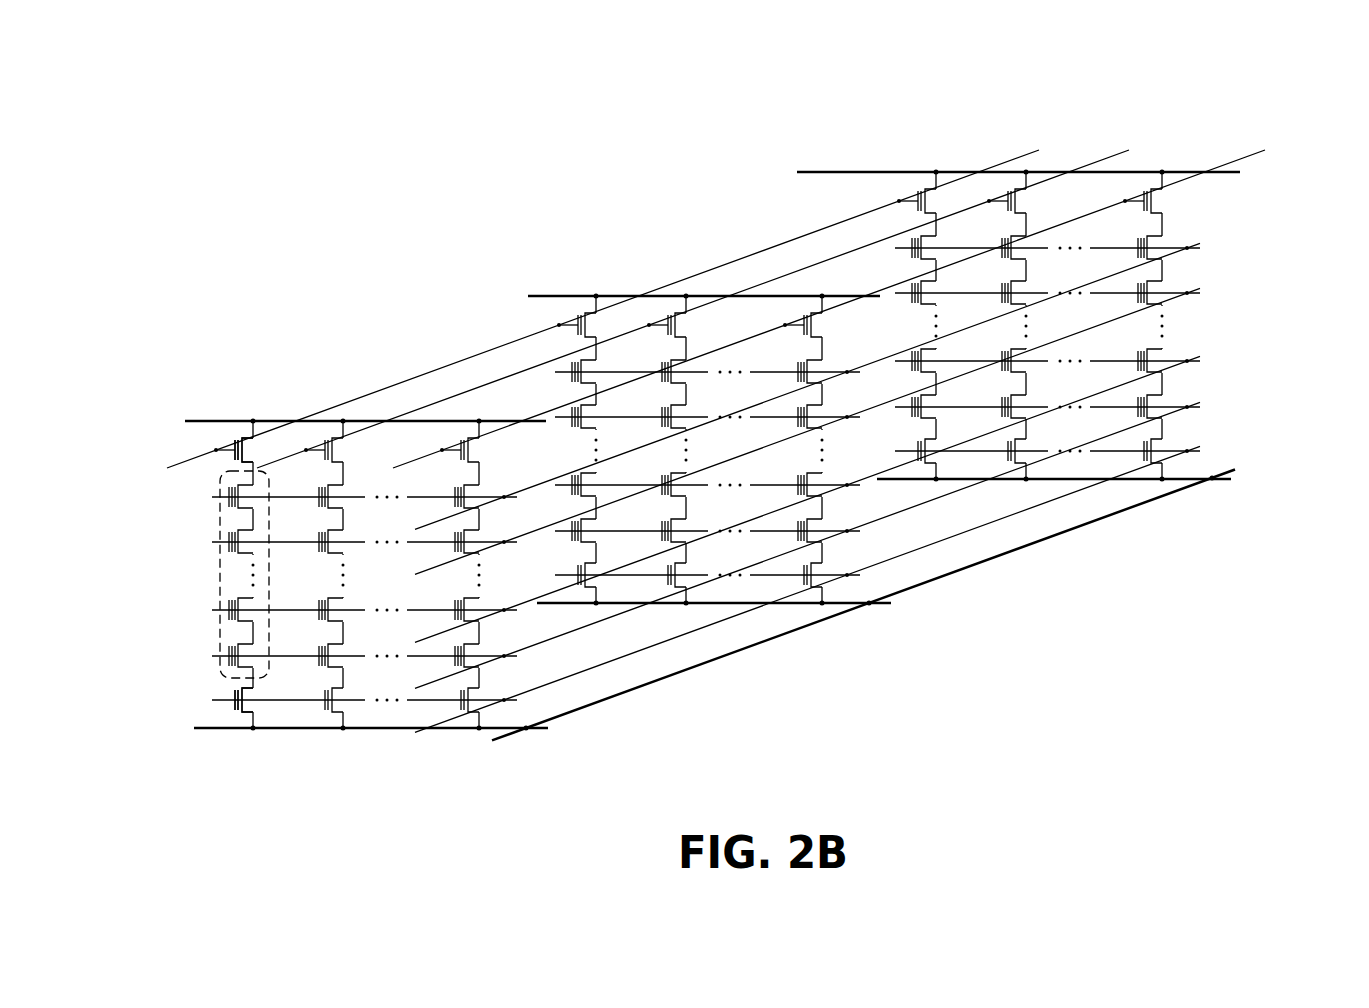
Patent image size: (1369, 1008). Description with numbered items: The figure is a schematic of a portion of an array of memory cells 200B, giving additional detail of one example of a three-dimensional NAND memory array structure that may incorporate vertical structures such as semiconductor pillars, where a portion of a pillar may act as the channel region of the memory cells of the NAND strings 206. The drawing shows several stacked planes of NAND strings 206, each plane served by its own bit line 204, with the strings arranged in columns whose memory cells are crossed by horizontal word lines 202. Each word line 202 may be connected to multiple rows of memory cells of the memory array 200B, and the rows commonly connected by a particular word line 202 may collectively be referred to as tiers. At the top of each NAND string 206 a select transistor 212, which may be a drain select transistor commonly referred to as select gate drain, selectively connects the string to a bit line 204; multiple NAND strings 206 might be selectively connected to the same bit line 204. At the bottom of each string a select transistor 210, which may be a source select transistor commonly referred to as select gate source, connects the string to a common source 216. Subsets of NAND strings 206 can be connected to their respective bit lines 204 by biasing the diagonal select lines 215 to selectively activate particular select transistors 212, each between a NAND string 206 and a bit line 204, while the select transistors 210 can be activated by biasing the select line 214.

The array of memory cells 200B is at (535, 118).
The word line 202 is at (1175, 253).
The bit line 204 is at (842, 170).
The NAND string 206 is at (216, 575).
The select transistor 210 is at (246, 716).
The select transistor 212 is at (240, 441).
The select line 214 is at (1063, 497).
The select line 215 is at (1243, 158).
The common source 216 is at (907, 591).